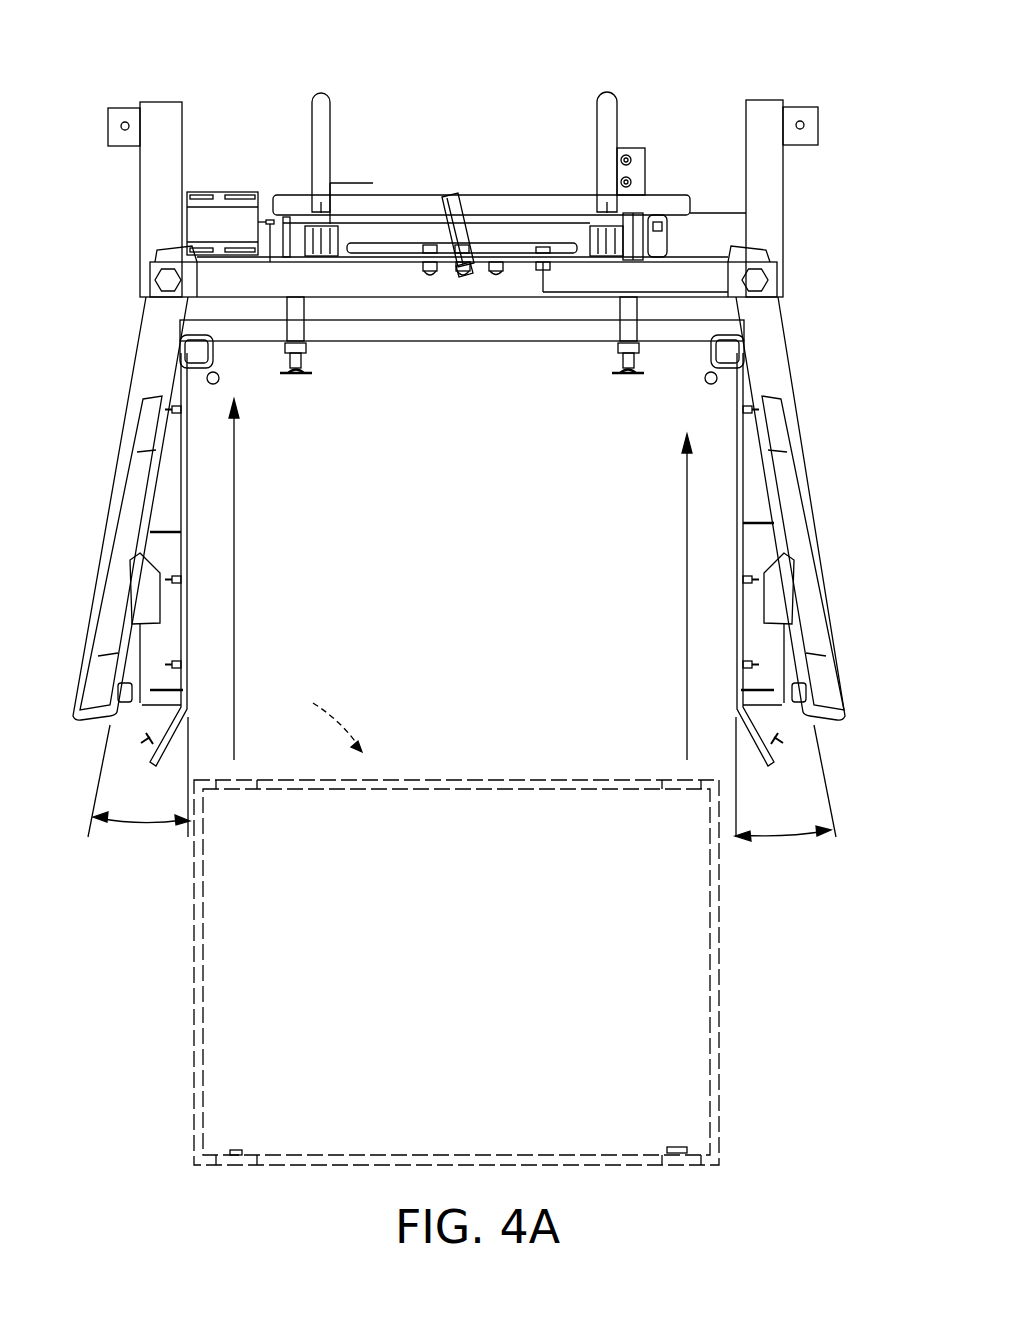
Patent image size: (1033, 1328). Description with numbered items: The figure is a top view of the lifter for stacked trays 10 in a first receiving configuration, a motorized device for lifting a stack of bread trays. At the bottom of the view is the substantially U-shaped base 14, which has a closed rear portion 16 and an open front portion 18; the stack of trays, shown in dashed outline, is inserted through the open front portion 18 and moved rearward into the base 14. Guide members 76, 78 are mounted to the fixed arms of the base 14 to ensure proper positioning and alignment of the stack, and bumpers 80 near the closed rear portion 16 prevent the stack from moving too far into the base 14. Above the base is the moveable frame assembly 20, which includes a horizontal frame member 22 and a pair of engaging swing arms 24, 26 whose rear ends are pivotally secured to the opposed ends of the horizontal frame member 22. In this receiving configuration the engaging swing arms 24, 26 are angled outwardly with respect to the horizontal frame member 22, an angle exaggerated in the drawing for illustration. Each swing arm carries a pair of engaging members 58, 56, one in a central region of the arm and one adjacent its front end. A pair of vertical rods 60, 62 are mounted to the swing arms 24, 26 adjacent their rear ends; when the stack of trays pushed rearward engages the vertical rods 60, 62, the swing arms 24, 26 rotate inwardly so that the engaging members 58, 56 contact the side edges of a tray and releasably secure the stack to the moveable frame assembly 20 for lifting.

The lifter for stacked trays 10 is at (130, 74).
The substantially U-shaped base 14 is at (462, 395).
The closed rear portion 16 is at (471, 343).
The open front portion 18 is at (540, 760).
The moveable frame assembly 20 is at (836, 577).
The horizontal frame member 22 is at (705, 278).
The engaging swing arm 24 is at (116, 498).
The engaging swing arm 26 is at (810, 494).
The engaging member 56 is at (762, 595).
The engaging member 58 is at (158, 598).
The vertical rod 60 is at (220, 378).
The vertical rod 62 is at (710, 382).
The guide member 76 is at (190, 650).
The guide member 78 is at (733, 648).
The bumper 80 is at (293, 380).